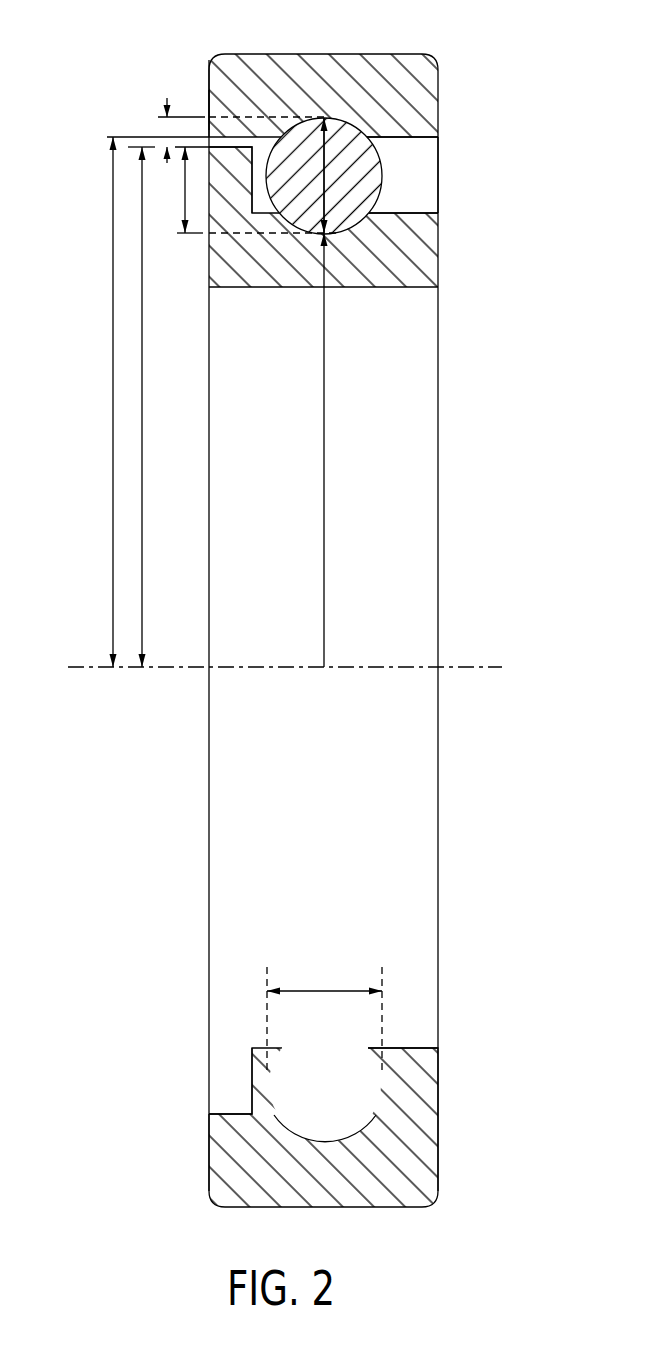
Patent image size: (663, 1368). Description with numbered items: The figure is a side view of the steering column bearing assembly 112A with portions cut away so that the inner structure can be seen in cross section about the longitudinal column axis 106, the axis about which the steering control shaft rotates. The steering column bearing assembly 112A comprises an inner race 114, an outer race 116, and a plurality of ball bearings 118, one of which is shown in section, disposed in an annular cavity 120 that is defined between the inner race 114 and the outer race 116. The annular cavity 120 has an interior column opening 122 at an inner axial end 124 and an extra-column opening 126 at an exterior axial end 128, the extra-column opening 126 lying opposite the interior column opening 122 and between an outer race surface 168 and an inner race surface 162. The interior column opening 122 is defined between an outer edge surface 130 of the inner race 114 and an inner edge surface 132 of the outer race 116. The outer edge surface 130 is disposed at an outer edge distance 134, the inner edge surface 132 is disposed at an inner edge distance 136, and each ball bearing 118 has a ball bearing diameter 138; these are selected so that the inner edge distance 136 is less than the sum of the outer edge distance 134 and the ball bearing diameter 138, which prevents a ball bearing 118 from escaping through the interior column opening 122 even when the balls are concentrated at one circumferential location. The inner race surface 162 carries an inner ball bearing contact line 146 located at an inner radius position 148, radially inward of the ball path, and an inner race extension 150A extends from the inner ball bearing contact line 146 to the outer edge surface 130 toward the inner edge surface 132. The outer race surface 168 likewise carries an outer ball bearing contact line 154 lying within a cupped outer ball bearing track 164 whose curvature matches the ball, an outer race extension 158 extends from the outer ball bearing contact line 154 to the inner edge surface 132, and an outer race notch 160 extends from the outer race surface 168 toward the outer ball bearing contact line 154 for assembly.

The longitudinal column axis 106 is at (120, 682).
The steering column bearing assembly 112A is at (179, 1096).
The inner race 114 is at (427, 270).
The outer race 116 is at (426, 66).
The ball bearing 118 is at (417, 80).
The annular cavity 120 is at (422, 180).
The interior column opening 122 is at (210, 112).
The inner axial end 124 is at (200, 104).
The extra-column opening 126 is at (430, 152).
The exterior axial end 128 is at (437, 188).
The outer edge surface 130 is at (230, 185).
The inner edge surface 132 is at (249, 124).
The outer edge distance 134 is at (143, 450).
The inner edge distance 136 is at (112, 415).
The ball bearing diameter 138 is at (306, 230).
The inner ball bearing contact line 146 is at (330, 236).
The inner radius position 148 is at (327, 447).
The inner race extension 150A is at (183, 205).
The outer ball bearing contact line 154 is at (318, 1147).
The outer race extension 158 is at (167, 98).
The outer race notch 160 is at (224, 1100).
The inner race surface 162 is at (418, 195).
The outer ball bearing track 164 is at (339, 119).
The outer race surface 168 is at (405, 1047).